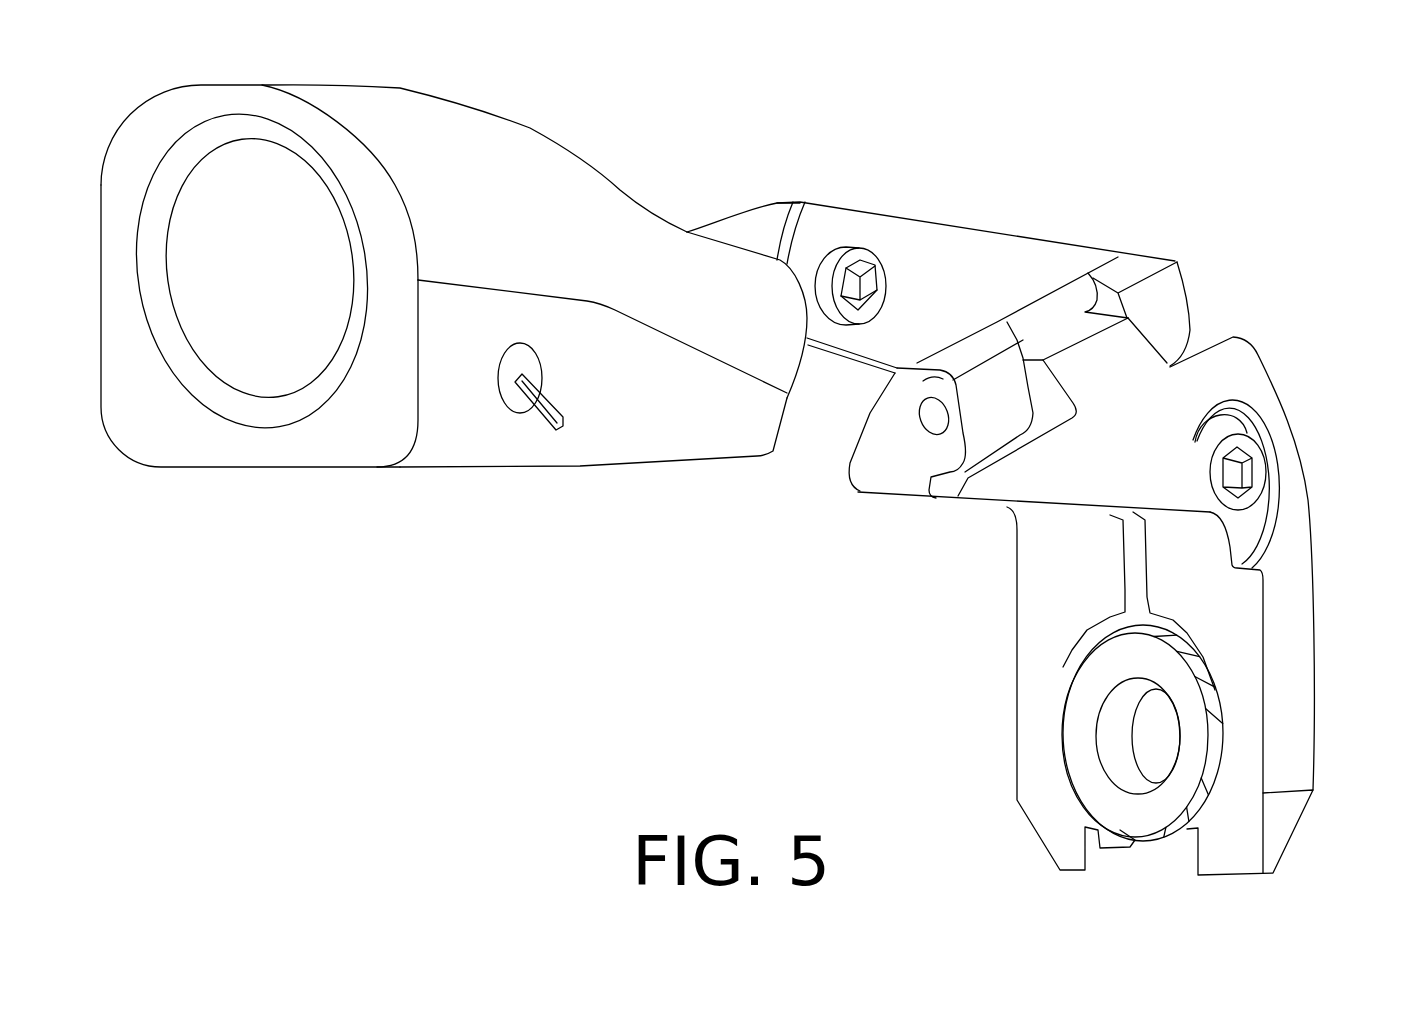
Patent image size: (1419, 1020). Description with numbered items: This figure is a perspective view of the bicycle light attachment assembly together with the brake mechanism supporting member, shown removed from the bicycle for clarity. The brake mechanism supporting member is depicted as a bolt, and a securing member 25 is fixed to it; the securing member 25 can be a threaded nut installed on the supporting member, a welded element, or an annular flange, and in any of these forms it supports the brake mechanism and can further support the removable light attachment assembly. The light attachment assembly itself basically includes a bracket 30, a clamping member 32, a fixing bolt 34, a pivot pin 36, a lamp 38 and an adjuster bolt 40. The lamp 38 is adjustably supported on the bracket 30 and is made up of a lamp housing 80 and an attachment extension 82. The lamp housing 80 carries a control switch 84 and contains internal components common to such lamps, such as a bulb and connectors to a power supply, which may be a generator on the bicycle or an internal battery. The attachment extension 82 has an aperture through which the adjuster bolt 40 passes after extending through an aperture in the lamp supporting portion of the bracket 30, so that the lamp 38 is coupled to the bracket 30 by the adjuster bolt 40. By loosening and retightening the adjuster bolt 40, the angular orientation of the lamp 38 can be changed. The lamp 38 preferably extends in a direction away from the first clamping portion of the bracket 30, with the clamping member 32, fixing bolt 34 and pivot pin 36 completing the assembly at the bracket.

The securing member 25 is at (1143, 823).
The bracket 30 is at (993, 387).
The clamping member 32 is at (1213, 605).
The fixing bolt 34 is at (1253, 467).
The pivot pin 36 is at (933, 418).
The lamp 38 is at (490, 128).
The adjuster bolt 40 is at (862, 258).
The lamp housing 80 is at (462, 445).
The attachment extension 82 is at (755, 228).
The control switch 84 is at (530, 407).